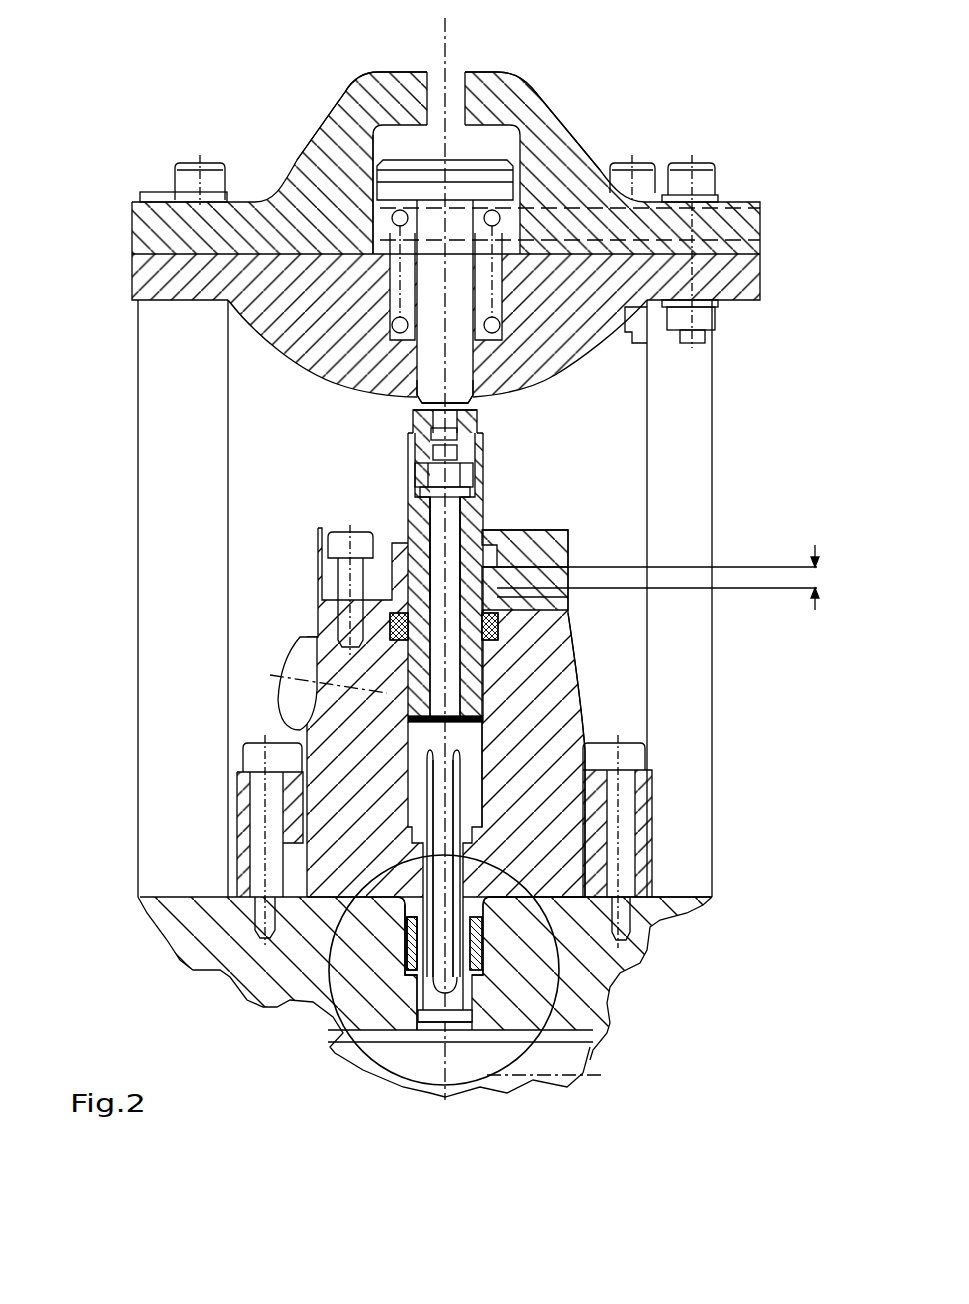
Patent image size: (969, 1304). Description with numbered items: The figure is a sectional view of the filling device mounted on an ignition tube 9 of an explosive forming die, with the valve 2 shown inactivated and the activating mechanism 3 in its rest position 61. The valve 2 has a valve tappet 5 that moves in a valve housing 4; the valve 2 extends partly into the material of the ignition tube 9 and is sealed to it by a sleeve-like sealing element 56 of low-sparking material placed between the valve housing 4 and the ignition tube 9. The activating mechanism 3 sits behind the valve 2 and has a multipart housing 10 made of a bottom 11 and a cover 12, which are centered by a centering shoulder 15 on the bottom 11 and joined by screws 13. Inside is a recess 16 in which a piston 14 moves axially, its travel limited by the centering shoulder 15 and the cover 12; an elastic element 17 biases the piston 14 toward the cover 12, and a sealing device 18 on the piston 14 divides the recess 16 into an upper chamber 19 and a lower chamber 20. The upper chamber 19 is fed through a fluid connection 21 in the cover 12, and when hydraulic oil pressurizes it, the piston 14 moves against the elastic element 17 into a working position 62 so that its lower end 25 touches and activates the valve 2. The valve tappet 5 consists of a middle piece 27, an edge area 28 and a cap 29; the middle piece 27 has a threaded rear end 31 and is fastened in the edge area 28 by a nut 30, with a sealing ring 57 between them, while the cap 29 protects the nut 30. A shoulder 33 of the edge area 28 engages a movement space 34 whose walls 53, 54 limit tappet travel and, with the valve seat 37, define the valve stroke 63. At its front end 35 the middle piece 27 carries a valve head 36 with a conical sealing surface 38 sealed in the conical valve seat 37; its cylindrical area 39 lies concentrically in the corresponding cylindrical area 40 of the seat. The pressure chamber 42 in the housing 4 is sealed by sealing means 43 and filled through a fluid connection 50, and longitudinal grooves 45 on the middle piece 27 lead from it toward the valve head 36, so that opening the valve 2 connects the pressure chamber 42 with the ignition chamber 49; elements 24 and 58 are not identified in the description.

The valve 2 is at (623, 706).
The activating mechanism 3 is at (740, 66).
The valve housing 4 is at (318, 562).
The valve tappet 5 is at (487, 455).
The ignition tube 9 is at (657, 920).
The housing 10 is at (368, 74).
The bottom 11 is at (130, 270).
The cover 12 is at (130, 228).
The screws 13 is at (172, 182).
The piston 14 is at (522, 187).
The centering shoulder 15 is at (380, 222).
The recess 16 is at (372, 128).
The elastic element 17 is at (503, 337).
The sealing device 18 is at (497, 163).
The upper chamber 19 is at (487, 137).
The lower chamber 20 is at (450, 137).
The fluid connection 21 is at (453, 80).
The spacer tube 24 is at (136, 490).
The lower end 25 is at (408, 399).
The middle piece 27 is at (463, 475).
The edge area 28 is at (472, 658).
The cap 29 is at (406, 432).
The nut 30 is at (410, 492).
The rear end 31 is at (479, 428).
The shoulder 33 is at (560, 530).
The movement space 34 is at (397, 582).
The front end 35 is at (462, 1035).
The valve head 36 is at (405, 1040).
The valve seat 37 is at (408, 1022).
The conical sealing surface 38 is at (477, 1022).
The cylindrical area 39 is at (412, 943).
The cylindrical area 40 is at (490, 1028).
The pressure chamber 42 is at (575, 686).
The sealing means 43 is at (572, 612).
The longitudinal grooves 45 is at (430, 762).
The ignition chamber 49 is at (553, 1085).
The fluid connection 50 is at (300, 643).
The wall 53 is at (452, 507).
The wall 54 is at (570, 603).
The sealing element 56 is at (408, 943).
The sealing ring 57 is at (408, 518).
The rod end 58 is at (430, 1030).
The rest position 61 is at (762, 208).
The working position 62 is at (762, 240).
The valve stroke 63 is at (833, 577).